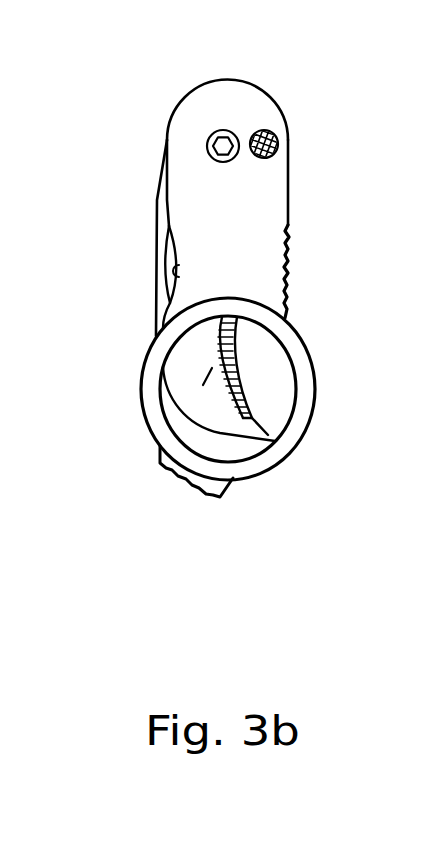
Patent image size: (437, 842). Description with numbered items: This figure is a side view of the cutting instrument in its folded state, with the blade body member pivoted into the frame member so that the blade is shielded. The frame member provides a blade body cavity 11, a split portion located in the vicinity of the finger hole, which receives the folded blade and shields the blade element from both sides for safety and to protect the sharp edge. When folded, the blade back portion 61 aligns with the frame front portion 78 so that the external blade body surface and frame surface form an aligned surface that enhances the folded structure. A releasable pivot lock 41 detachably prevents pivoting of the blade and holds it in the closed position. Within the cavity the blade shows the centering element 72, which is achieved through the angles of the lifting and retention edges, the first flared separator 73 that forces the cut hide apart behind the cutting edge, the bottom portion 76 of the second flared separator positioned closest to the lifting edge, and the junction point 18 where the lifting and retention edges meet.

The frame front portion 78 is at (177, 150).
The releasable pivot lock 41 is at (278, 142).
The blade back portion 61 is at (156, 226).
The blade body cavity 11 is at (157, 412).
The junction point 18 is at (227, 337).
The first flared separator 73 is at (200, 352).
The bottom portion 76 is at (222, 393).
The centering element 72 is at (203, 385).